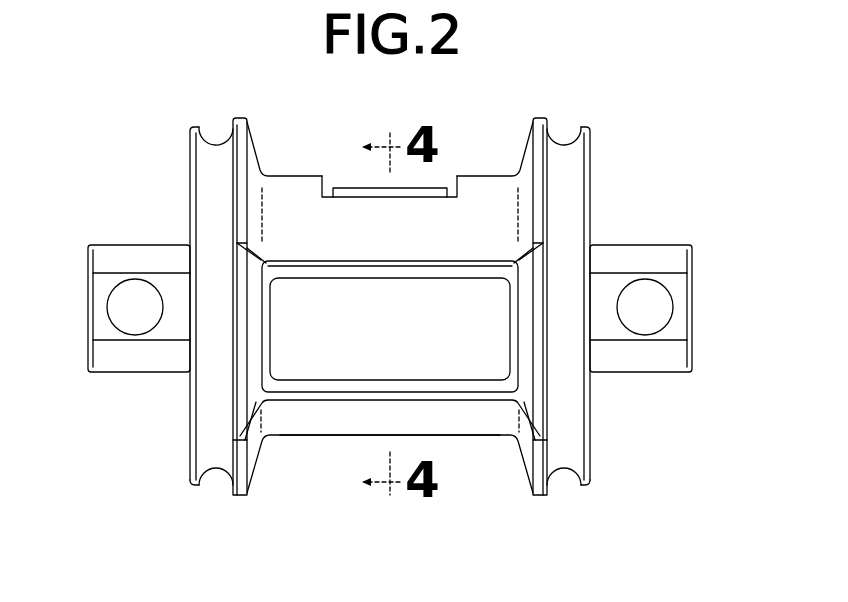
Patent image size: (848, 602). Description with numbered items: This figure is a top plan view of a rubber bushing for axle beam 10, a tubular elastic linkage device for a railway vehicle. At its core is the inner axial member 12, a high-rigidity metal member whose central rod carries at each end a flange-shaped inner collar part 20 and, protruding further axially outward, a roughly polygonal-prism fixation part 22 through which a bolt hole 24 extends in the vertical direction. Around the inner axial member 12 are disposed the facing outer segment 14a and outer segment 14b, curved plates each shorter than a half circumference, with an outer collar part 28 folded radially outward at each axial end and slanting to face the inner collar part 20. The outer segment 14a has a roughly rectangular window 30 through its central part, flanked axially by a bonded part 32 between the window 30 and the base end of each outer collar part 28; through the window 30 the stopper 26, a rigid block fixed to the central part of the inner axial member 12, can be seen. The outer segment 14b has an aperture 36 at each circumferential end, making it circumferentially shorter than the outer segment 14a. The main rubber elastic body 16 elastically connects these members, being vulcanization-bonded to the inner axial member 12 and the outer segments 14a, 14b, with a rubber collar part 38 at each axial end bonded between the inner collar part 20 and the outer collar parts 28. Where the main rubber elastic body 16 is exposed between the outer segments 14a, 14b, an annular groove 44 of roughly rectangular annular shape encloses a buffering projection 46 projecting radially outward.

The rubber bushing for axle beam 10 is at (669, 159).
The inner axial member 12 is at (612, 233).
The outer segment 14a is at (307, 171).
The outer segment 14b is at (302, 441).
The main rubber elastic body 16 is at (562, 141).
The inner collar part 20 is at (188, 445).
The fixation part 22 is at (132, 353).
The bolt hole 24 is at (117, 306).
The stopper 26 is at (363, 190).
The outer collar part 28 is at (237, 132).
The window 30 is at (456, 178).
The bonded part 32 is at (293, 187).
The aperture 36 is at (360, 388).
The rubber collar part 38 is at (210, 195).
The annular groove 44 is at (437, 279).
The buffering projection 46 is at (443, 355).